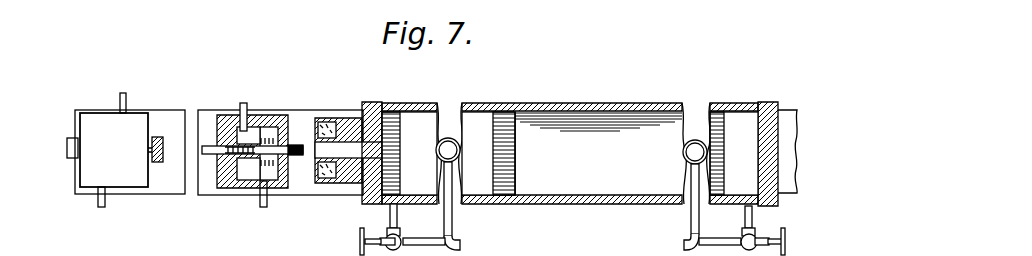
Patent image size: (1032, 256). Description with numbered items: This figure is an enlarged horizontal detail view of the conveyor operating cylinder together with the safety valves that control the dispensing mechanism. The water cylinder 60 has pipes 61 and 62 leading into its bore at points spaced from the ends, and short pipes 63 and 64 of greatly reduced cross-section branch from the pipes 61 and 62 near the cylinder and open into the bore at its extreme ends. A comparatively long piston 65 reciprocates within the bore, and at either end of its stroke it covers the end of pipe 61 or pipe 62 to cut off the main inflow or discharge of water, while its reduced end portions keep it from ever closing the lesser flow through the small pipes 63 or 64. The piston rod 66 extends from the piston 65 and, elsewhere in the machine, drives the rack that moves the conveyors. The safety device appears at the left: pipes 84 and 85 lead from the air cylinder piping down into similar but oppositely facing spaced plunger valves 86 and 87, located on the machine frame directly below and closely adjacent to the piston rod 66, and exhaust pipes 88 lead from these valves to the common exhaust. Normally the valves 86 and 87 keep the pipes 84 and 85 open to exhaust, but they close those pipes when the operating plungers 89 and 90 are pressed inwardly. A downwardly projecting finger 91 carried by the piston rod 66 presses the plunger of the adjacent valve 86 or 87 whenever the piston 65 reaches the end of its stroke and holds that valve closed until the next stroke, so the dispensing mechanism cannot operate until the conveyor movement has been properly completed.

The water cylinder 60 is at (658, 112).
The pipe 61 is at (465, 110).
The pipe 62 is at (698, 120).
The short pipe 63 is at (452, 218).
The short pipe 64 is at (694, 218).
The piston 65 is at (414, 122).
The piston rod 66 is at (357, 160).
The pipe 84 is at (247, 107).
The pipe 85 is at (126, 100).
The plunger valve 86 is at (283, 118).
The plunger valve 87 is at (140, 120).
The exhaust pipe 88 is at (106, 205).
The operating plunger 89 is at (208, 146).
The operating plunger 90 is at (148, 152).
The downwardly projecting finger 91 is at (158, 163).